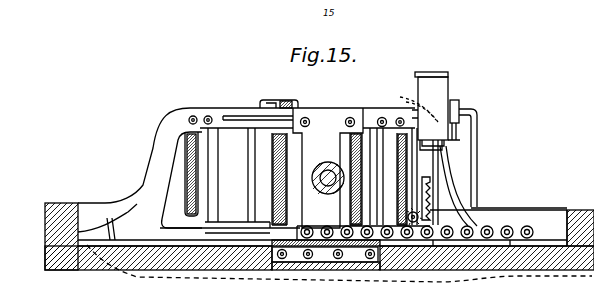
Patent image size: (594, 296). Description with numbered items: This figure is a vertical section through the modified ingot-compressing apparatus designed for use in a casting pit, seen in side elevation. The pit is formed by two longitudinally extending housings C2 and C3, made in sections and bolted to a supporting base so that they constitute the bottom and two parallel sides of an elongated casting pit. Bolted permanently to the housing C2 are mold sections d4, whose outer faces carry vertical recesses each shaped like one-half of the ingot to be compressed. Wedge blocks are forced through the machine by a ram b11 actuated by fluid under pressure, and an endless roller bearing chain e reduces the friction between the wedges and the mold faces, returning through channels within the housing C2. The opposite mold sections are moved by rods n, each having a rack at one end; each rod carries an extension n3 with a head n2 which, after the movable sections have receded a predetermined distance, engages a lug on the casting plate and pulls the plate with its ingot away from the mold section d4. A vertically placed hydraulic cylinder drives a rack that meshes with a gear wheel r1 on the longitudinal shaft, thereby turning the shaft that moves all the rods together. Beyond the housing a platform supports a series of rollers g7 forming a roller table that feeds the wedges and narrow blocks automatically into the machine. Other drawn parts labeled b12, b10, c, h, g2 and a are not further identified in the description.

The housing C2 is at (156, 166).
The housing C3 is at (411, 103).
The roller bearing chain e is at (185, 202).
The mold section d4 is at (230, 178).
The ram b11 is at (315, 168).
The bracket block b12 is at (328, 168).
The slide bar b10 is at (292, 226).
The guide column c is at (399, 176).
The gear wheel r1 is at (409, 182).
The rod n is at (405, 217).
The head n2 is at (440, 94).
The extension n3 is at (507, 154).
The roller g7 is at (480, 228).
The bed rail h is at (237, 234).
The roller bed g2 is at (288, 234).
The base outline a is at (339, 263).